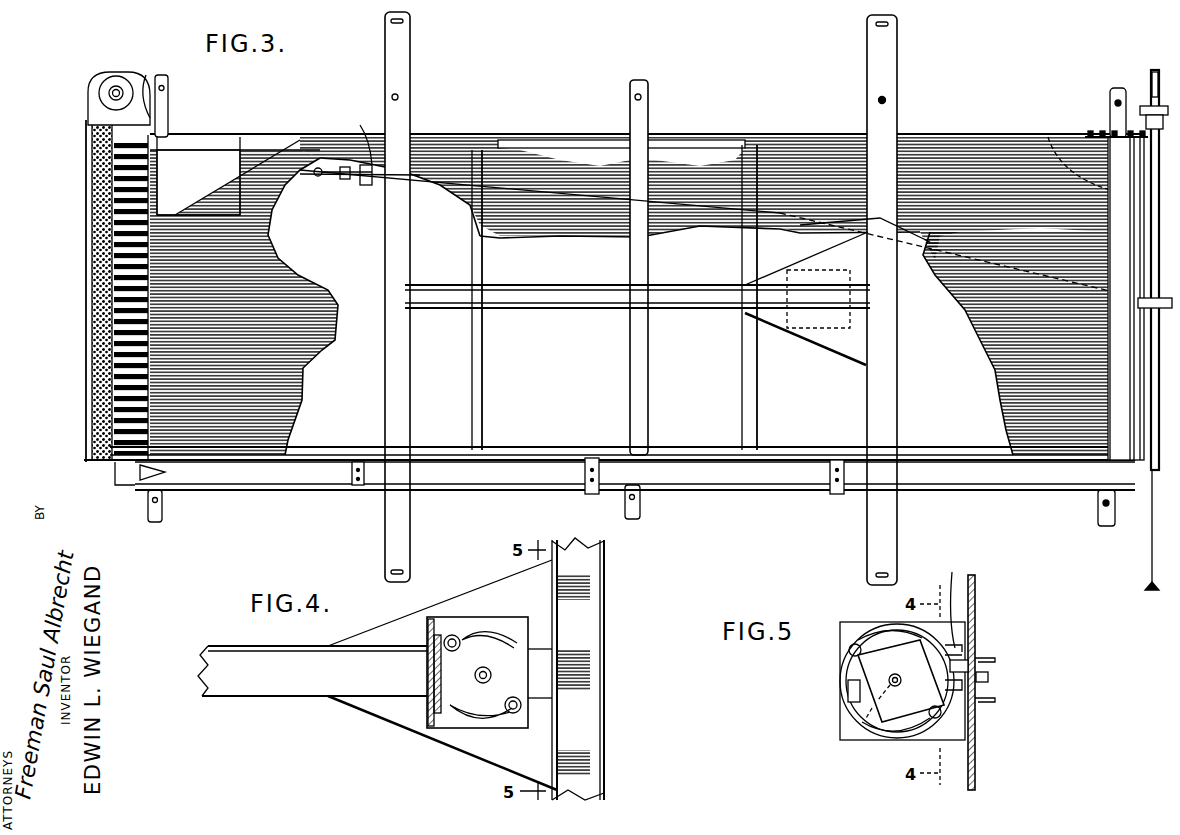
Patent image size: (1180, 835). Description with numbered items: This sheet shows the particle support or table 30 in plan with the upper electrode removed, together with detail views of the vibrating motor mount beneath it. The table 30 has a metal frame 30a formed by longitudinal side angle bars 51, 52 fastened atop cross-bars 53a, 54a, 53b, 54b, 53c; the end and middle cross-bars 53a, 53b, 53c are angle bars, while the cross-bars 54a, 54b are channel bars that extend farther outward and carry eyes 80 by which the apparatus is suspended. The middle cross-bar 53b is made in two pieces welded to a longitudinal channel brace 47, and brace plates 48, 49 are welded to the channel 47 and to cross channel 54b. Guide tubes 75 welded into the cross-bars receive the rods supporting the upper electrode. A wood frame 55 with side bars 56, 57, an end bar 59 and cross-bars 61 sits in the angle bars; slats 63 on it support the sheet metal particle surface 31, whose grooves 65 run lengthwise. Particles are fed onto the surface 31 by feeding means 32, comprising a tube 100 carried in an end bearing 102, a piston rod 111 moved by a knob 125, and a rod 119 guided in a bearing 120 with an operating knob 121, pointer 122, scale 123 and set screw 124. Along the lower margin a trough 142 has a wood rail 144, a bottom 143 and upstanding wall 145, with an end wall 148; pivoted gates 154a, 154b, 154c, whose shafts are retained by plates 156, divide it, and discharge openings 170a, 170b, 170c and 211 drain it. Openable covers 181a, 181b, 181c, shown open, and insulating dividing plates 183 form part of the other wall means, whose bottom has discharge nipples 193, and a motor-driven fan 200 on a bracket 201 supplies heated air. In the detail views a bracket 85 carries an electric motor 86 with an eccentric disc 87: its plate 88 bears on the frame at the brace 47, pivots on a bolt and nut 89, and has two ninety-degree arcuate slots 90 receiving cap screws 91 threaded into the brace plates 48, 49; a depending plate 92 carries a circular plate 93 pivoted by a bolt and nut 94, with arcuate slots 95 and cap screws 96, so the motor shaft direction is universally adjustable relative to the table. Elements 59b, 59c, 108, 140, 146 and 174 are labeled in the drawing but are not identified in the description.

In FIG. 3, the particle support or table 30 is at (930, 135).
In FIG. 3, the metal frame 30a is at (742, 137).
In FIG. 3, the particle supporting surface 31 is at (985, 165).
In FIG. 3, the feeding means 32 is at (1050, 134).
In FIG. 3, the longitudinally extending brace 47 is at (550, 285).
In FIG. 4, the longitudinally extending brace 47 is at (245, 698).
In FIG. 5, the longitudinally extending brace 47 is at (992, 703).
In FIG. 3, the brace plate 48 is at (812, 262).
In FIG. 4, the brace plate 48 is at (465, 745).
In FIG. 5, the brace plate 48 is at (975, 768).
In FIG. 3, the brace plate 49 is at (835, 345).
In FIG. 4, the brace plate 49 is at (495, 600).
In FIG. 5, the brace plate 49 is at (976, 594).
In FIG. 3, the side bar 51 is at (560, 140).
In FIG. 3, the side bar 52 is at (560, 447).
In FIG. 3, the cross-bar 53a is at (168, 112).
In FIG. 3, the cross-bar 53b is at (640, 514).
In FIG. 3, the cross-bar 53c is at (1098, 520).
In FIG. 3, the cross-bar 54a is at (400, 70).
In FIG. 3, the cross-bar 54b is at (897, 70).
In FIG. 4, the cross-bar 54b is at (608, 622).
In FIG. 3, the frame 55 is at (238, 136).
In FIG. 3, the side bar 56 is at (215, 136).
In FIG. 3, the side bar 57 is at (255, 455).
In FIG. 3, the end bar 59 is at (165, 178).
In FIG. 3, the short post 59b is at (648, 108).
In FIG. 3, the short post 59c is at (1110, 96).
In FIG. 3, the cross-bars 61 is at (472, 380).
In FIG. 3, the slats 63 is at (245, 170).
In FIG. 3, the grooves 65 is at (812, 330).
In FIG. 3, the guide tubes 75 is at (165, 89).
In FIG. 3, the eyes 80 is at (400, 22).
In FIG. 4, the bracket 85 is at (450, 617).
In FIG. 5, the bracket 85 is at (835, 712).
In FIG. 5, the electric motor 86 is at (845, 673).
In FIG. 5, the eccentric weight or disc 87 is at (980, 655).
In FIG. 4, the plate 88 is at (440, 617).
In FIG. 5, the plate 88 is at (978, 640).
In FIG. 4, the bolt and nut 89 is at (490, 670).
In FIG. 5, the bolt and nut 89 is at (985, 678).
In FIG. 4, the arcuate slots 90 is at (505, 628).
In FIG. 4, the cap screws 91 is at (455, 640).
In FIG. 5, the cap screws 91 is at (995, 735).
In FIG. 4, the depending plate 92 is at (427, 620).
In FIG. 5, the depending plate 92 is at (842, 738).
In FIG. 4, the plate 93 is at (395, 702).
In FIG. 5, the plate 93 is at (845, 682).
In FIG. 5, the bolt and nut 94 is at (870, 720).
In FIG. 5, the arcuate slots 95 is at (884, 628).
In FIG. 5, the cap screws 96 is at (852, 644).
In FIG. 3, the tube 100 is at (1142, 125).
In FIG. 3, the tubular end bearing 102 is at (1150, 150).
In FIG. 3, the shaft 108 is at (1150, 78).
In FIG. 3, the piston rod 111 is at (1148, 572).
In FIG. 3, the rod 119 is at (415, 177).
In FIG. 3, the bearing 120 is at (385, 180).
In FIG. 3, the operating knob 121 is at (316, 178).
In FIG. 3, the pointer 122 is at (344, 180).
In FIG. 3, the scale 123 is at (366, 186).
In FIG. 3, the set screw 124 is at (355, 137).
In FIG. 3, the knob 125 is at (1150, 592).
In FIG. 3, the end column 140 is at (1130, 235).
In FIG. 3, the trough 142 is at (770, 490).
In FIG. 3, the bottom 143 is at (700, 535).
In FIG. 3, the rail 144 is at (775, 460).
In FIG. 3, the wall 145 is at (735, 470).
In FIG. 3, the gear 146 is at (1142, 298).
In FIG. 3, the end wall 148 is at (128, 490).
In FIG. 3, the pivoted gate 154a is at (352, 490).
In FIG. 3, the pivoted gate 154b is at (585, 490).
In FIG. 3, the pivoted gate 154c is at (830, 492).
In FIG. 3, the plate 156 is at (355, 462).
In FIG. 3, the discharge opening 170a is at (368, 482).
In FIG. 3, the discharge opening 170b is at (605, 482).
In FIG. 3, the discharge opening 170c is at (853, 482).
In FIG. 3, the bracket 174 is at (112, 468).
In FIG. 3, the openable cover 181a is at (100, 180).
In FIG. 3, the openable cover 181b is at (95, 308).
In FIG. 3, the openable cover 181c is at (95, 405).
In FIG. 3, the dividing plates 183 is at (118, 200).
In FIG. 3, the discharge nipples 193 is at (112, 455).
In FIG. 3, the motor-driven fan 200 is at (86, 92).
In FIG. 3, the bracket 201 is at (147, 72).
In FIG. 3, the discharge openings 211 is at (165, 471).